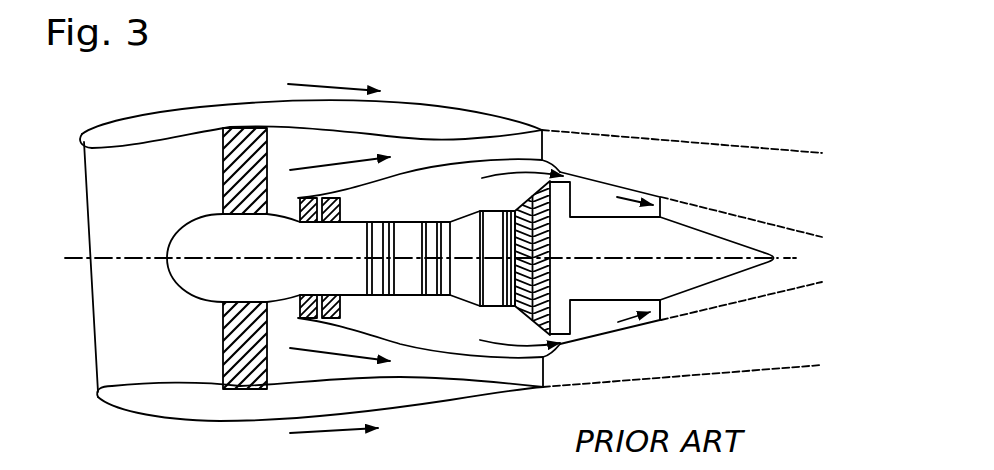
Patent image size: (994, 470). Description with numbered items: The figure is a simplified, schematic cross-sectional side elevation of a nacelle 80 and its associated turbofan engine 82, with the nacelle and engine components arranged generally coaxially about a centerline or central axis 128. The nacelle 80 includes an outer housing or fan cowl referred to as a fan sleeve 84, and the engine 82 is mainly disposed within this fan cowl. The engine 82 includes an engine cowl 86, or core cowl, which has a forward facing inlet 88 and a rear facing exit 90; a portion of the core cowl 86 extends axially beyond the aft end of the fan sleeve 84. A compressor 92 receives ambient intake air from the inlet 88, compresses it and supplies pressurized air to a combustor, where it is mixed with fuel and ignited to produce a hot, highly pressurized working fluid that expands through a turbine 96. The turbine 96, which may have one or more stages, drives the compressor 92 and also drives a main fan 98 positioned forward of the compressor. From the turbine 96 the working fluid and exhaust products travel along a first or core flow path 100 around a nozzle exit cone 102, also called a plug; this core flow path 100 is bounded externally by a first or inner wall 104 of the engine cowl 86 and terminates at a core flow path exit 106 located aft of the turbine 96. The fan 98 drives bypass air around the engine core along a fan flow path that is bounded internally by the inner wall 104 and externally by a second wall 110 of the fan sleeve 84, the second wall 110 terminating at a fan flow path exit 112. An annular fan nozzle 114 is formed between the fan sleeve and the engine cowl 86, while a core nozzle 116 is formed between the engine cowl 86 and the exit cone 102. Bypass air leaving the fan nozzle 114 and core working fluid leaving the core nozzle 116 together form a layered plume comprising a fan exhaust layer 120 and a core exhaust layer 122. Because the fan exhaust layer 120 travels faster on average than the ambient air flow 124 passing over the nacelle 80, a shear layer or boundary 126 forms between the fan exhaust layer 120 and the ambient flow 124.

The nacelle 80 is at (72, 95).
The engine 82 is at (414, 376).
The fan sleeve 84 is at (153, 117).
The engine cowl 86 is at (500, 360).
The inlet 88 is at (283, 311).
The exit 90 is at (668, 207).
The compressor 92 is at (340, 306).
The turbine 96 is at (552, 218).
The main fan 98 is at (222, 178).
The core flow path 100 is at (627, 323).
The nozzle exit cone 102 is at (703, 283).
The inner wall 104 is at (473, 160).
The core flow path exit 106 is at (667, 302).
The second wall 110 is at (437, 140).
The fan flow path exit 112 is at (545, 143).
The annular fan nozzle 114 is at (505, 142).
The core nozzle 116 is at (628, 190).
The fan exhaust layer 120 is at (811, 197).
The core exhaust layer 122 is at (837, 271).
The ambient air flow 124 is at (321, 85).
The shear layer 126 is at (741, 148).
The central axis 128 is at (118, 263).